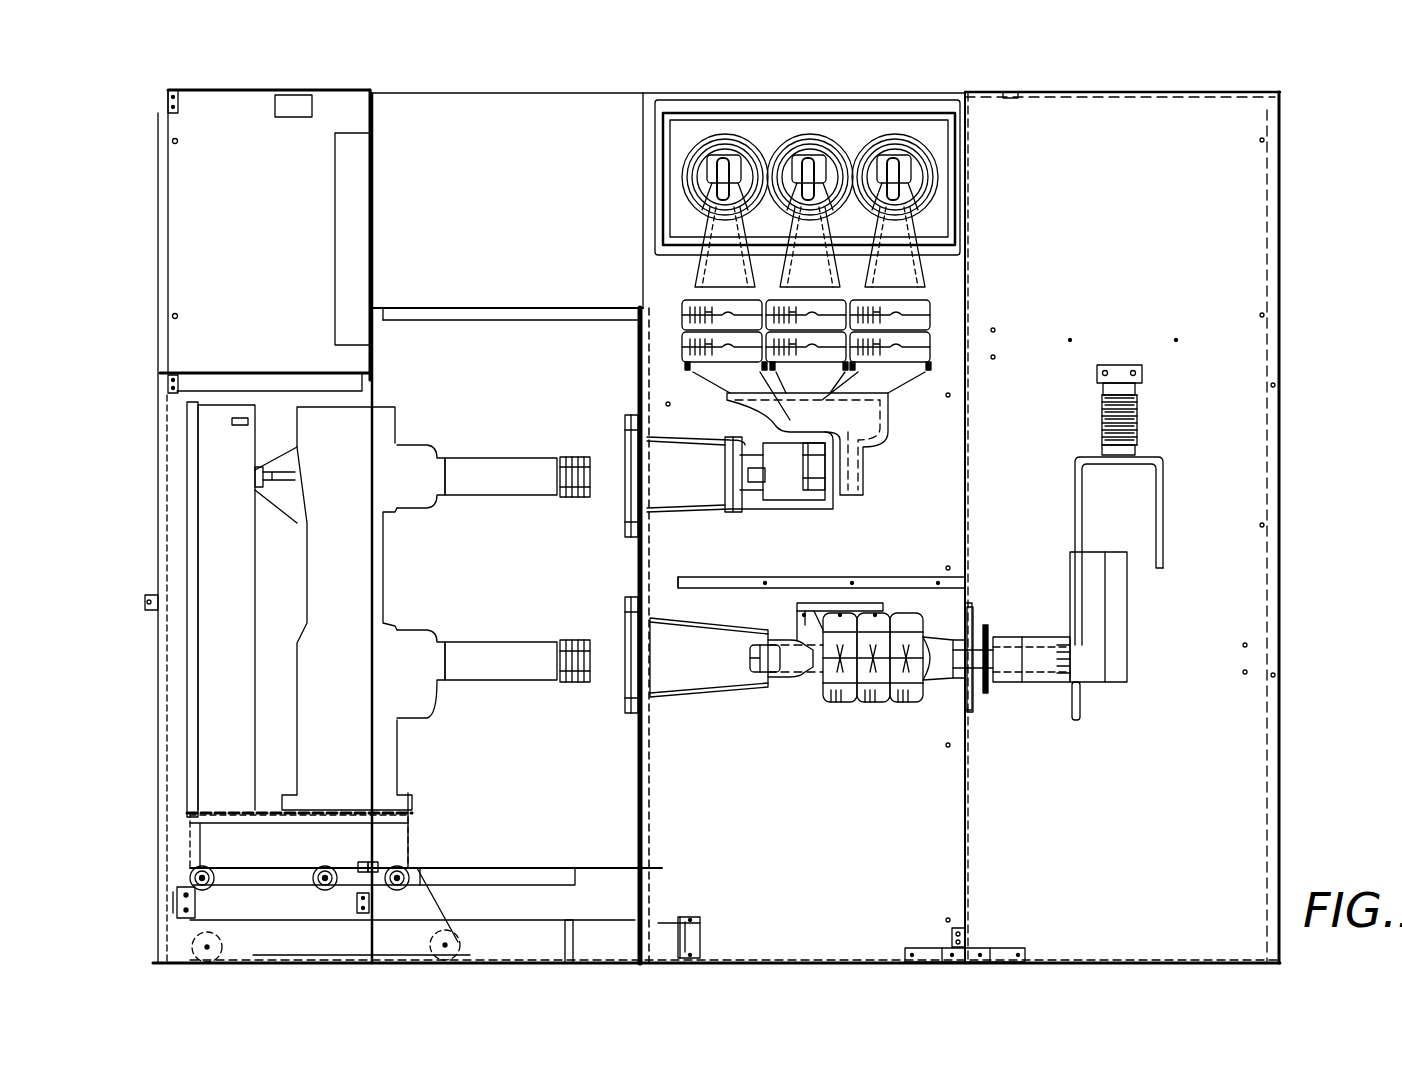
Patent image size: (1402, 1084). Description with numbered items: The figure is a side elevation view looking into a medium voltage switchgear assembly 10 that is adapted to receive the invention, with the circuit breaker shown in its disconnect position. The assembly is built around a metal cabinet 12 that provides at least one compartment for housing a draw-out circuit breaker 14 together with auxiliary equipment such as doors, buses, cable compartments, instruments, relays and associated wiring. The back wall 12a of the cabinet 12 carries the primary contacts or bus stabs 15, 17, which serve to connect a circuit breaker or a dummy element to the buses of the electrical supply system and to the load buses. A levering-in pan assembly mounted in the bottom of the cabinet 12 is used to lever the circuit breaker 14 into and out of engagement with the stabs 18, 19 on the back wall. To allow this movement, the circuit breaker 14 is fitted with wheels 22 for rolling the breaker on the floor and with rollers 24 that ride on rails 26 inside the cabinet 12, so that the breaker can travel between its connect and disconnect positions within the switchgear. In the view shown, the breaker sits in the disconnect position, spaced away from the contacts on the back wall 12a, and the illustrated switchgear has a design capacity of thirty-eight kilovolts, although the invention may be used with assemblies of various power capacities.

The medium voltage switchgear assembly 10 is at (152, 532).
The metal cabinet 12 is at (1280, 318).
The back wall 12a is at (637, 750).
The draw-out circuit breaker 14 is at (398, 422).
The primary contact or bus stab 15 is at (703, 695).
The primary contact or bus stab 17 is at (688, 513).
The stab 18 is at (486, 638).
The stab 19 is at (504, 456).
The wheels 22 is at (217, 934).
The rollers 24 is at (200, 871).
The rails 26 is at (177, 903).